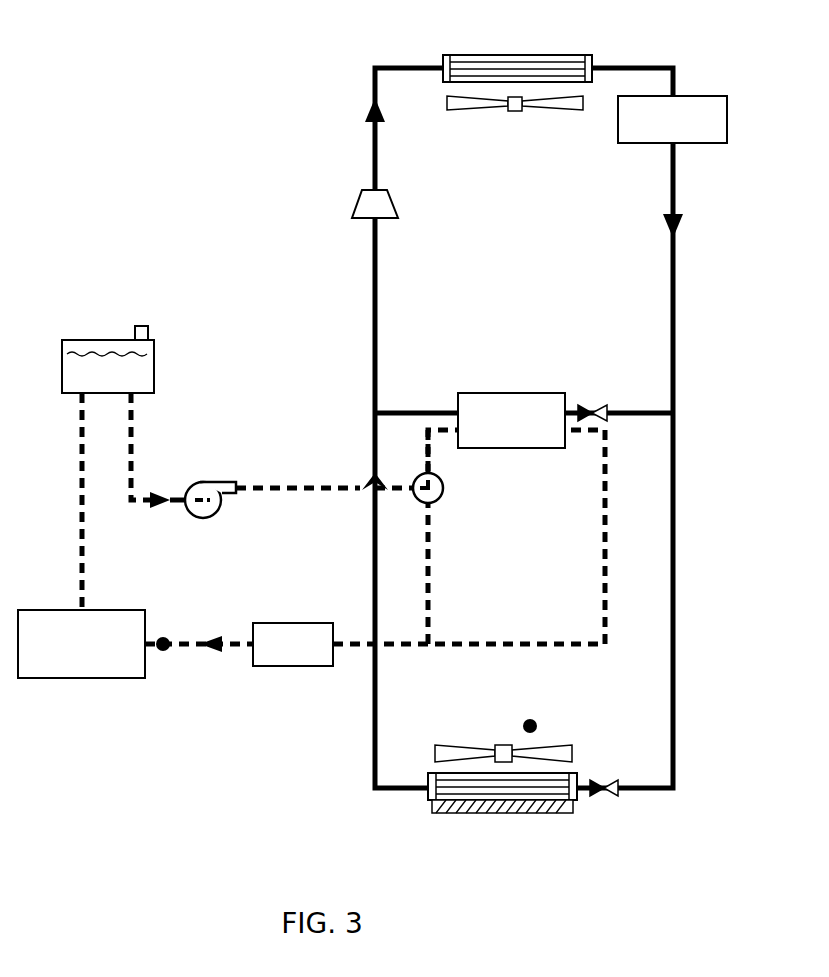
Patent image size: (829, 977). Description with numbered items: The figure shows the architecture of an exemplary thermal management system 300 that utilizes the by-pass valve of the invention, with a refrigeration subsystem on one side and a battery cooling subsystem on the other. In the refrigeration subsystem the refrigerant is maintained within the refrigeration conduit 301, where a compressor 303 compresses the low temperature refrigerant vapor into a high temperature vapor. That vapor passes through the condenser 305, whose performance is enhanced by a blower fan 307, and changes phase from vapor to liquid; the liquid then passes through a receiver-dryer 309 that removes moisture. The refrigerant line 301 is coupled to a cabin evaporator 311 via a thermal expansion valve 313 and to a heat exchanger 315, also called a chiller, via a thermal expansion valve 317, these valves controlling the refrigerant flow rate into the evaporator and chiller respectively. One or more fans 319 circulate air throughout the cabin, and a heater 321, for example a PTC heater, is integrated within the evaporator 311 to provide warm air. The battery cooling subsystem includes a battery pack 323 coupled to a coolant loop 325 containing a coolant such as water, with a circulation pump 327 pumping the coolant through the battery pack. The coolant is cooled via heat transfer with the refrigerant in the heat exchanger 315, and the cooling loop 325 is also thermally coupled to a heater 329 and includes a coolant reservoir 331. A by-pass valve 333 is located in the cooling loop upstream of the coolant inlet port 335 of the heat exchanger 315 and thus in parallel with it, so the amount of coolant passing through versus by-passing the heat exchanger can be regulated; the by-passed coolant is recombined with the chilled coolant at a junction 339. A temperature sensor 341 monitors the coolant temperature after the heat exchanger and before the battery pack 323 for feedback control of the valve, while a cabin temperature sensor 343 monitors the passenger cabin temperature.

The thermal management system 300 is at (140, 143).
The refrigeration conduit 301 is at (372, 285).
The compressor 303 is at (355, 202).
The condenser 305 is at (550, 55).
The blower fan 307 is at (450, 110).
The receiver-dryer 309 is at (727, 118).
The cabin evaporator 311 is at (455, 785).
The thermal expansion valve 313 is at (608, 783).
The heat exchanger 315 is at (493, 393).
The thermal expansion valve 317 is at (583, 410).
The fans 319 is at (545, 747).
The heater 321 is at (537, 813).
The battery pack 323 is at (48, 678).
The coolant loop 325 is at (82, 502).
The circulation pump 327 is at (198, 483).
The heater 329 is at (265, 623).
The coolant reservoir 331 is at (62, 367).
The by-pass valve 333 is at (445, 488).
The coolant inlet port 335 is at (453, 443).
The junction 339 is at (441, 628).
The temperature sensor 341 is at (163, 638).
The cabin temperature sensor 343 is at (528, 718).